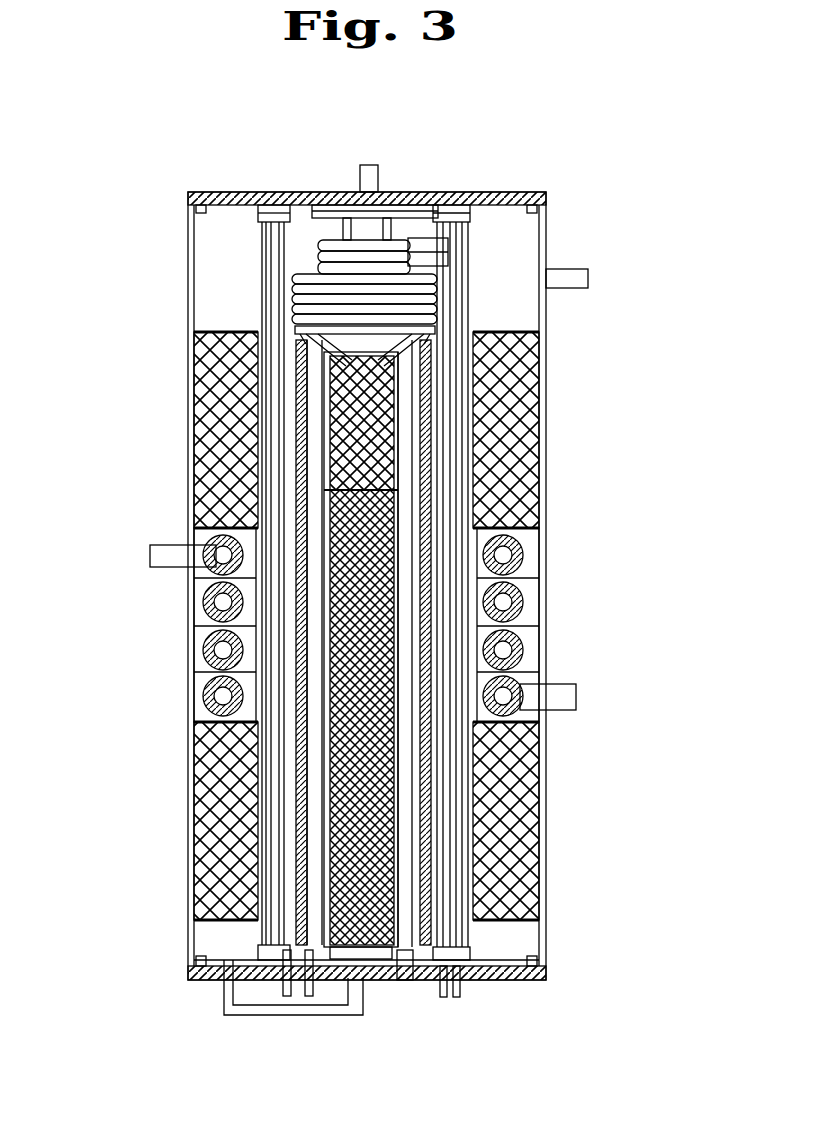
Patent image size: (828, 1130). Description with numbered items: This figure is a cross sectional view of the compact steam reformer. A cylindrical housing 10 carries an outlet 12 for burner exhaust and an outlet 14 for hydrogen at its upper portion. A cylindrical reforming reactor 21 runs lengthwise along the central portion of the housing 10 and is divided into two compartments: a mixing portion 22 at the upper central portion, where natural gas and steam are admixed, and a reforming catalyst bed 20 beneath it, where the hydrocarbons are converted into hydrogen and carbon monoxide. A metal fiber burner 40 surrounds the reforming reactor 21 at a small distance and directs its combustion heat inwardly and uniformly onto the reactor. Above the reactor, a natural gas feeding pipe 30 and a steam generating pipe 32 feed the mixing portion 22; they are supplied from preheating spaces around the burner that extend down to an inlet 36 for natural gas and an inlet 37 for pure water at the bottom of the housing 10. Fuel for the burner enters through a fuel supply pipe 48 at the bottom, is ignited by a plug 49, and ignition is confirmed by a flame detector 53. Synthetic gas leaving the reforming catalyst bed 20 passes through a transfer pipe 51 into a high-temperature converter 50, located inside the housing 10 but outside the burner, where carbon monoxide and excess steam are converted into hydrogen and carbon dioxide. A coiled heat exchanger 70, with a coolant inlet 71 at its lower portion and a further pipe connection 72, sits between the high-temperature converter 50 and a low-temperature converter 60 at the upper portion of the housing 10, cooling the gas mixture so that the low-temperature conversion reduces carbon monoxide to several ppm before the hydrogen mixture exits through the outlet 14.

The cylindrical housing 10 is at (548, 192).
The outlet for burner exhaust 12 is at (373, 168).
The outlet for hydrogen 14 is at (565, 269).
The natural gas feeding pipe 30 is at (333, 240).
The steam generating pipe 32 is at (292, 276).
The low-temperature converter 60 is at (192, 410).
The mixing portion 22 is at (388, 410).
The reforming reactor 21 is at (405, 606).
The reforming catalyst bed 20 is at (388, 776).
The metal fiber burner 40 is at (428, 851).
The high-temperature converter 50 is at (192, 812).
The coiled heat exchanger 70 is at (192, 648).
The inlet of heat exchanger 71 is at (576, 697).
The left pipe 72 is at (150, 556).
The transfer pipe 51 is at (232, 1016).
The fuel supply pipe 48 is at (287, 997).
The plug 49 is at (312, 996).
The flame detector 53 is at (404, 982).
The inlet for pure water 37 is at (443, 998).
The inlet for natural gas 36 is at (457, 998).